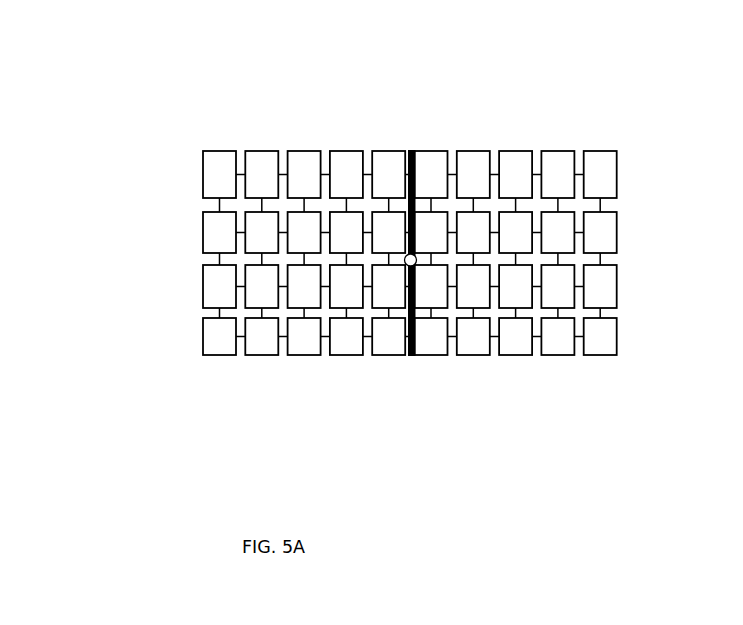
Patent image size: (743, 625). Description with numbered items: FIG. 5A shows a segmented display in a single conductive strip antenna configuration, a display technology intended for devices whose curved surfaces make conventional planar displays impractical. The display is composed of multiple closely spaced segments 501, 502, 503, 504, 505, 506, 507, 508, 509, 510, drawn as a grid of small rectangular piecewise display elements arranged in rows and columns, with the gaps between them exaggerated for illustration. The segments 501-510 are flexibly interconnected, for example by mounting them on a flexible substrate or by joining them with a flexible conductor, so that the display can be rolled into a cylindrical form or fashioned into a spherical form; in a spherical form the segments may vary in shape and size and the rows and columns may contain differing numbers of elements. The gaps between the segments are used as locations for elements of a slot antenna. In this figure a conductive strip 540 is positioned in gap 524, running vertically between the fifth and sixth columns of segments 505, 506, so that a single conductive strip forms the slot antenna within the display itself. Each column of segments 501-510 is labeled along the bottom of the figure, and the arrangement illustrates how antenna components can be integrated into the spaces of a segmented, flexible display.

The display segment 501 is at (220, 363).
The display segment 502 is at (262, 363).
The display segment 503 is at (304, 363).
The display segment 504 is at (346, 363).
The display segment 505 is at (389, 363).
The display segment 506 is at (431, 363).
The display segment 507 is at (473, 363).
The display segment 508 is at (516, 363).
The display segment 509 is at (558, 363).
The display segment 510 is at (600, 363).
The gap 524 is at (383, 258).
The conductive strip 540 is at (468, 197).